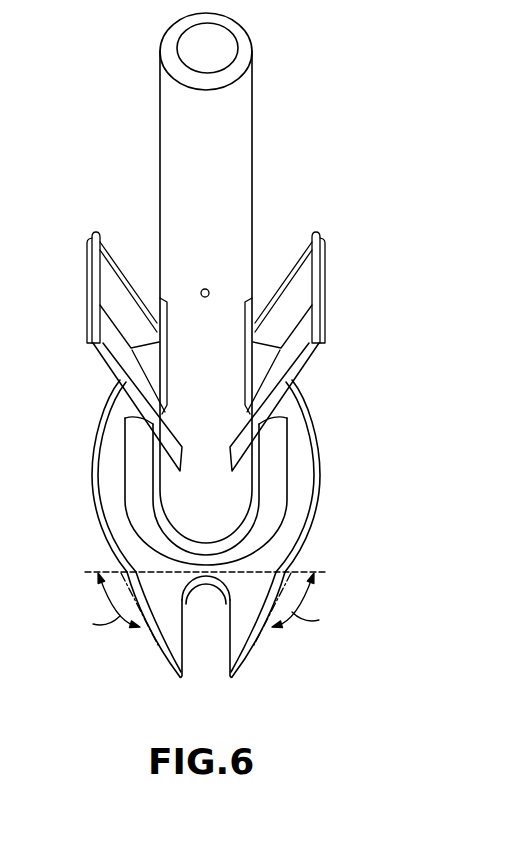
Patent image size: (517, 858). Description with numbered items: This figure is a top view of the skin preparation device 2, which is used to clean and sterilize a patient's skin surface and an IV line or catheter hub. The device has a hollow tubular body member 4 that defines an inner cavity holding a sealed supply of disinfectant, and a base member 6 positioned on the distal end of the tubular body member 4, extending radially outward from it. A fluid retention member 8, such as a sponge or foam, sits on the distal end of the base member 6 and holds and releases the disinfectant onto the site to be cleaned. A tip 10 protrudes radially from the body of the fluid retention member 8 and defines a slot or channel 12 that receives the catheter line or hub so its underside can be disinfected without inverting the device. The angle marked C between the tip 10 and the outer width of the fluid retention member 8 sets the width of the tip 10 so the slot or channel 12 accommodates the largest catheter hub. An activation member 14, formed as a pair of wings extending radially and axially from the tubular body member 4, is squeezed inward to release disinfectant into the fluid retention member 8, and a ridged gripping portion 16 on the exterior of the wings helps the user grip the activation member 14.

The skin preparation device 2 is at (82, 155).
The tubular body member 4 is at (240, 142).
The base member 6 is at (270, 487).
The fluid retention member 8 is at (107, 494).
The tip 10 is at (246, 645).
The slot or channel 12 is at (203, 662).
The activation member 14 is at (302, 358).
The gripping portion 16 is at (325, 278).